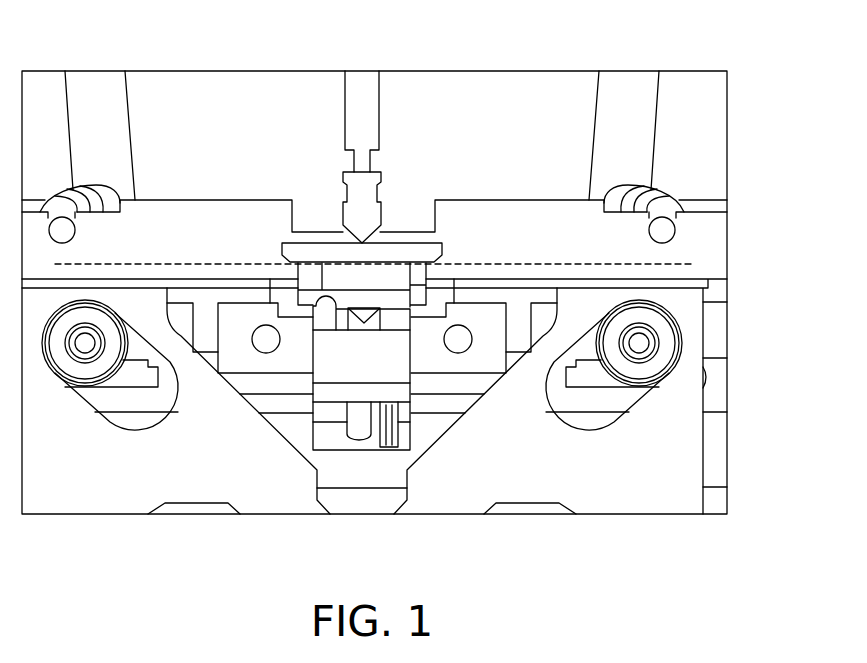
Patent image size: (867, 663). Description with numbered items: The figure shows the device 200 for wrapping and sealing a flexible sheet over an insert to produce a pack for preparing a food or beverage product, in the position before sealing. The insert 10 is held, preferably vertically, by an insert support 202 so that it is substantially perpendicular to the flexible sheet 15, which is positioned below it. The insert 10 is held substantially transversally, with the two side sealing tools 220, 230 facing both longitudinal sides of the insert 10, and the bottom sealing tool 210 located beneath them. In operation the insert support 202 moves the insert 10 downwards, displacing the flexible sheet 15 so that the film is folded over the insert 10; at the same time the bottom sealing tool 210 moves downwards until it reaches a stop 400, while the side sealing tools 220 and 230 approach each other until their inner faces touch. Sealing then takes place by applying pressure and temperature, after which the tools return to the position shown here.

The device 200 is at (752, 416).
The insert support 202 is at (359, 82).
The insert 10 is at (363, 198).
The flexible sheet 15 is at (680, 264).
The side sealing tool 220 is at (247, 320).
The side sealing tool 230 is at (483, 320).
The bottom sealing tool 210 is at (335, 368).
The stop 400 is at (385, 403).